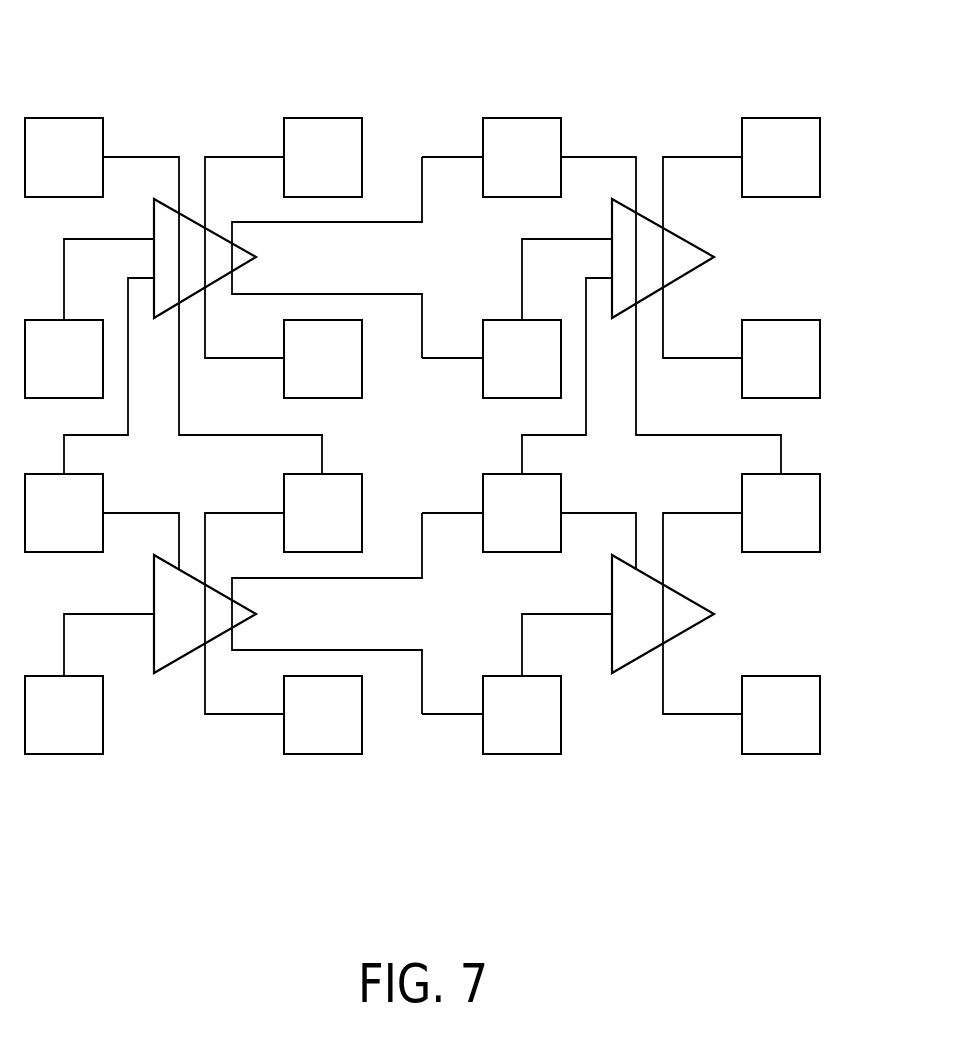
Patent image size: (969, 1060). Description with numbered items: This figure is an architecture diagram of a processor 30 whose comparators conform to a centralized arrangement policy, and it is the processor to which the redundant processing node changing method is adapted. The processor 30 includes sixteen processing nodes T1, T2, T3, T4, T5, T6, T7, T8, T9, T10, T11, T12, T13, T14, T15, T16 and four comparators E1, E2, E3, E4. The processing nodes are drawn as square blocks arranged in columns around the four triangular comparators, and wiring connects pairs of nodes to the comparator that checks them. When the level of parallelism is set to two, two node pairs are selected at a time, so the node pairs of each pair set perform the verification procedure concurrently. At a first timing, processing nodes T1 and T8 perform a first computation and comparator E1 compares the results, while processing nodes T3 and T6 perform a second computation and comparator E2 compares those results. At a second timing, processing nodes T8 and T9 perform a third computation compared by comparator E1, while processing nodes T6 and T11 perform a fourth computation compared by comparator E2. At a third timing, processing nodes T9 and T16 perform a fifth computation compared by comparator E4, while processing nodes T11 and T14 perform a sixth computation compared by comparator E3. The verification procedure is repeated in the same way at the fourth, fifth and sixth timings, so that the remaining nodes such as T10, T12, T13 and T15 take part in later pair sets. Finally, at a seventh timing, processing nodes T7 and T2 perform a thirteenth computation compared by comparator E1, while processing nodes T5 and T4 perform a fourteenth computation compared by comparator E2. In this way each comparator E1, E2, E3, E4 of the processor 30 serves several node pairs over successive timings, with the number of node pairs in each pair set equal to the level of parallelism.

The processor 30 is at (139, 37).
The processing node T1 is at (64, 157).
The processing node T2 is at (64, 359).
The processing node T3 is at (64, 513).
The processing node T4 is at (64, 715).
The processing node T5 is at (323, 715).
The processing node T6 is at (323, 513).
The processing node T7 is at (323, 359).
The processing node T8 is at (323, 157).
The processing node T9 is at (522, 157).
The processing node T10 is at (522, 359).
The processing node T11 is at (522, 513).
The processing node T12 is at (522, 715).
The processing node T13 is at (781, 715).
The processing node T14 is at (781, 513).
The processing node T15 is at (781, 359).
The processing node T16 is at (781, 157).
The comparator E1 is at (205, 258).
The comparator E2 is at (205, 614).
The comparator E3 is at (663, 614).
The comparator E4 is at (663, 258).